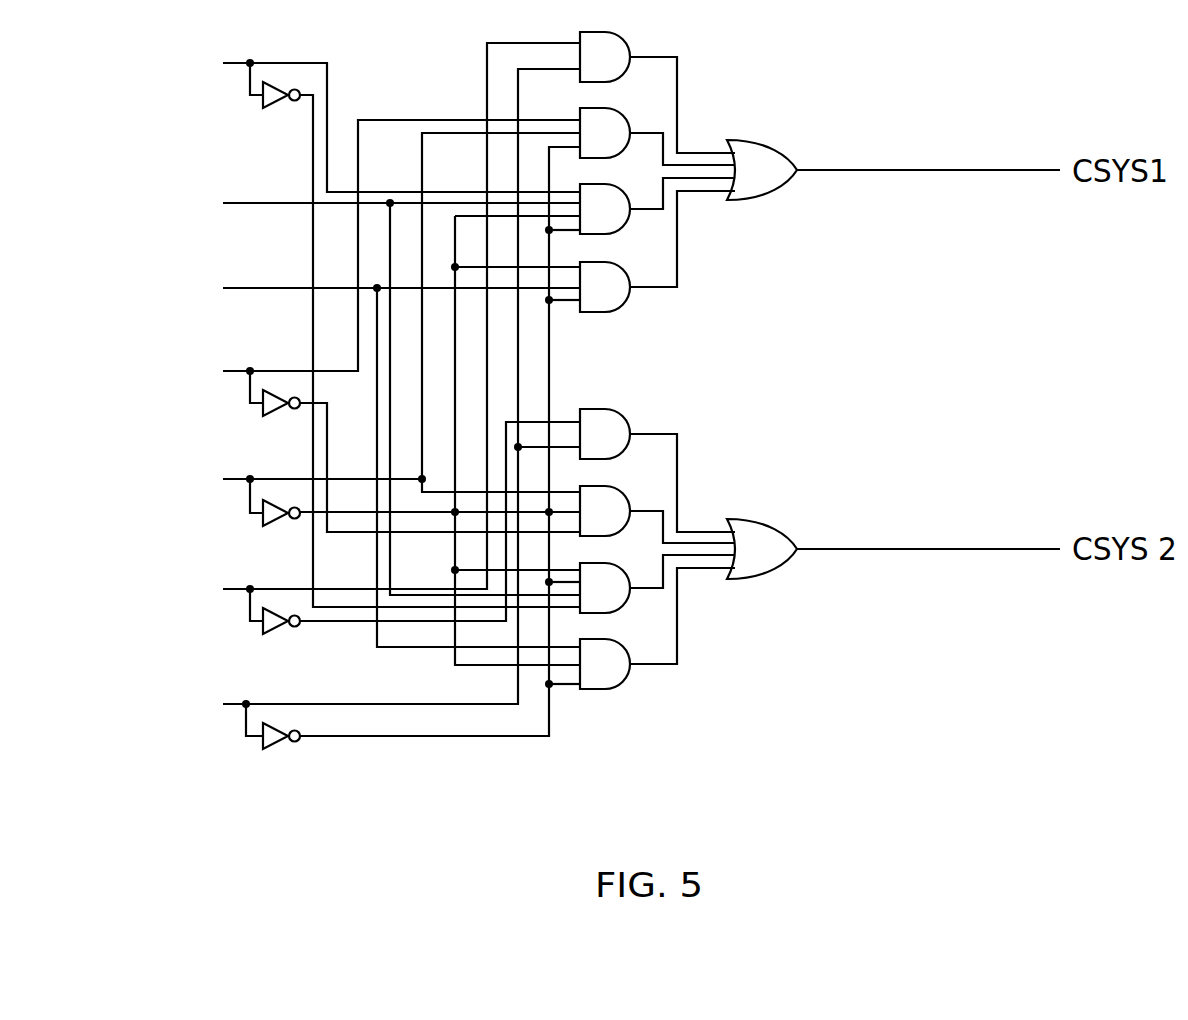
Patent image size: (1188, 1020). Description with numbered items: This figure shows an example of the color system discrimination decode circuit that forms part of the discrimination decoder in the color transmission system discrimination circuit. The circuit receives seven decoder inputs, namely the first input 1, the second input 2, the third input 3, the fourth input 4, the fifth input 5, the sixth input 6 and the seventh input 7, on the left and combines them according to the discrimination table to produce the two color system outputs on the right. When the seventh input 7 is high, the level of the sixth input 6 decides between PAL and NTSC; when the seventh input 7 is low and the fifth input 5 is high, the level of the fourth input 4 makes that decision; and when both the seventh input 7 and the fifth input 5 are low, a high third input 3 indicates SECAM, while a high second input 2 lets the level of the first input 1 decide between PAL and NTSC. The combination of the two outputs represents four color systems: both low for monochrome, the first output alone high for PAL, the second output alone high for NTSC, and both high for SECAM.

The input signal Q1 1 is at (375, 326).
The input signal Q2 2 is at (375, 390).
The input signal Q3 3 is at (375, 459).
The input signal Q4 4 is at (375, 326).
The input signal Q5 5 is at (375, 399).
The input signal Q6 6 is at (375, 338).
The input signal Q7 7 is at (375, 409).